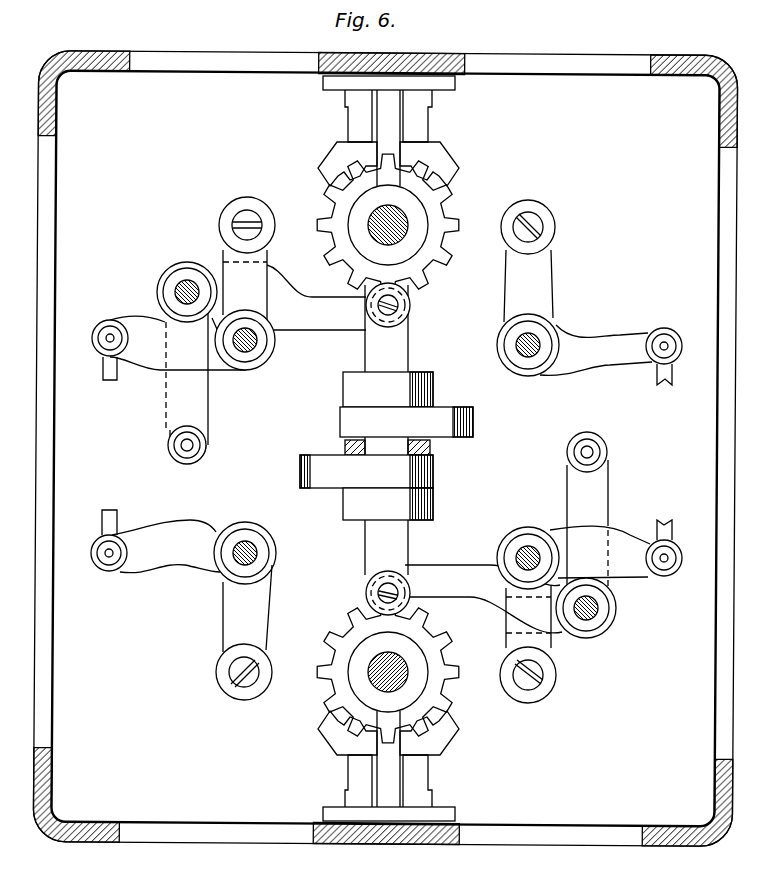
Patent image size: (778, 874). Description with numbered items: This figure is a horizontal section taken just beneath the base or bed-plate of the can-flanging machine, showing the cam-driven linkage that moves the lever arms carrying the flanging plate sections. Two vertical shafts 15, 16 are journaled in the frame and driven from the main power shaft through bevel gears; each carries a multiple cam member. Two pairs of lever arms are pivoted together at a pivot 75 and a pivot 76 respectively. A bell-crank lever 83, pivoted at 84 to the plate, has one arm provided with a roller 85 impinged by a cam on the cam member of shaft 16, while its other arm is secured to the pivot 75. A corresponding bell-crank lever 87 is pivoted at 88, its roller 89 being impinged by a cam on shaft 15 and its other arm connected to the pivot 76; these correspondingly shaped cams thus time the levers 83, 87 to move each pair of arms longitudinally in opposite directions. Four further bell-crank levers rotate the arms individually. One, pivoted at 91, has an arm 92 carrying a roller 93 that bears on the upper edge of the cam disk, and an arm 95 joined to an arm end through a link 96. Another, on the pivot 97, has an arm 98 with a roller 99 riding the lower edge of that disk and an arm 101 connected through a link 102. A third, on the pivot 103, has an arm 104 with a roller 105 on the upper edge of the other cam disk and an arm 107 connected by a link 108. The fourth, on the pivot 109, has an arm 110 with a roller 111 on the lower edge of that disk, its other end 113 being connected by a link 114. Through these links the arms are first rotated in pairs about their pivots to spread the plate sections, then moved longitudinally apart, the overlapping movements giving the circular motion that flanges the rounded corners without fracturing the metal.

The vertical shaft 15 is at (375, 680).
The vertical shaft 16 is at (395, 222).
The pivot 75 is at (200, 448).
The pivot 76 is at (600, 455).
The bell-crank lever 83 is at (216, 268).
The pivot 84 is at (176, 289).
The roller 85 is at (411, 319).
The bell-crank lever 87 is at (566, 636).
The pivot 88 is at (604, 615).
The roller 89 is at (388, 572).
The pivot 91 is at (260, 347).
The arm 92 is at (263, 263).
The roller 93 is at (247, 203).
The arm 95 is at (148, 364).
The link 96 is at (105, 373).
The pivot 97 is at (520, 350).
The arm 98 is at (540, 286).
The roller 99 is at (548, 222).
The arm 101 is at (604, 338).
The link 102 is at (665, 385).
The pivot 103 is at (256, 551).
The arm 104 is at (262, 606).
The roller 105 is at (222, 681).
The arm 107 is at (181, 560).
The link 108 is at (112, 512).
The pivot 109 is at (525, 541).
The arm 110 is at (512, 620).
The roller 111 is at (540, 688).
The other end of lever 113 is at (626, 535).
The link 114 is at (662, 531).